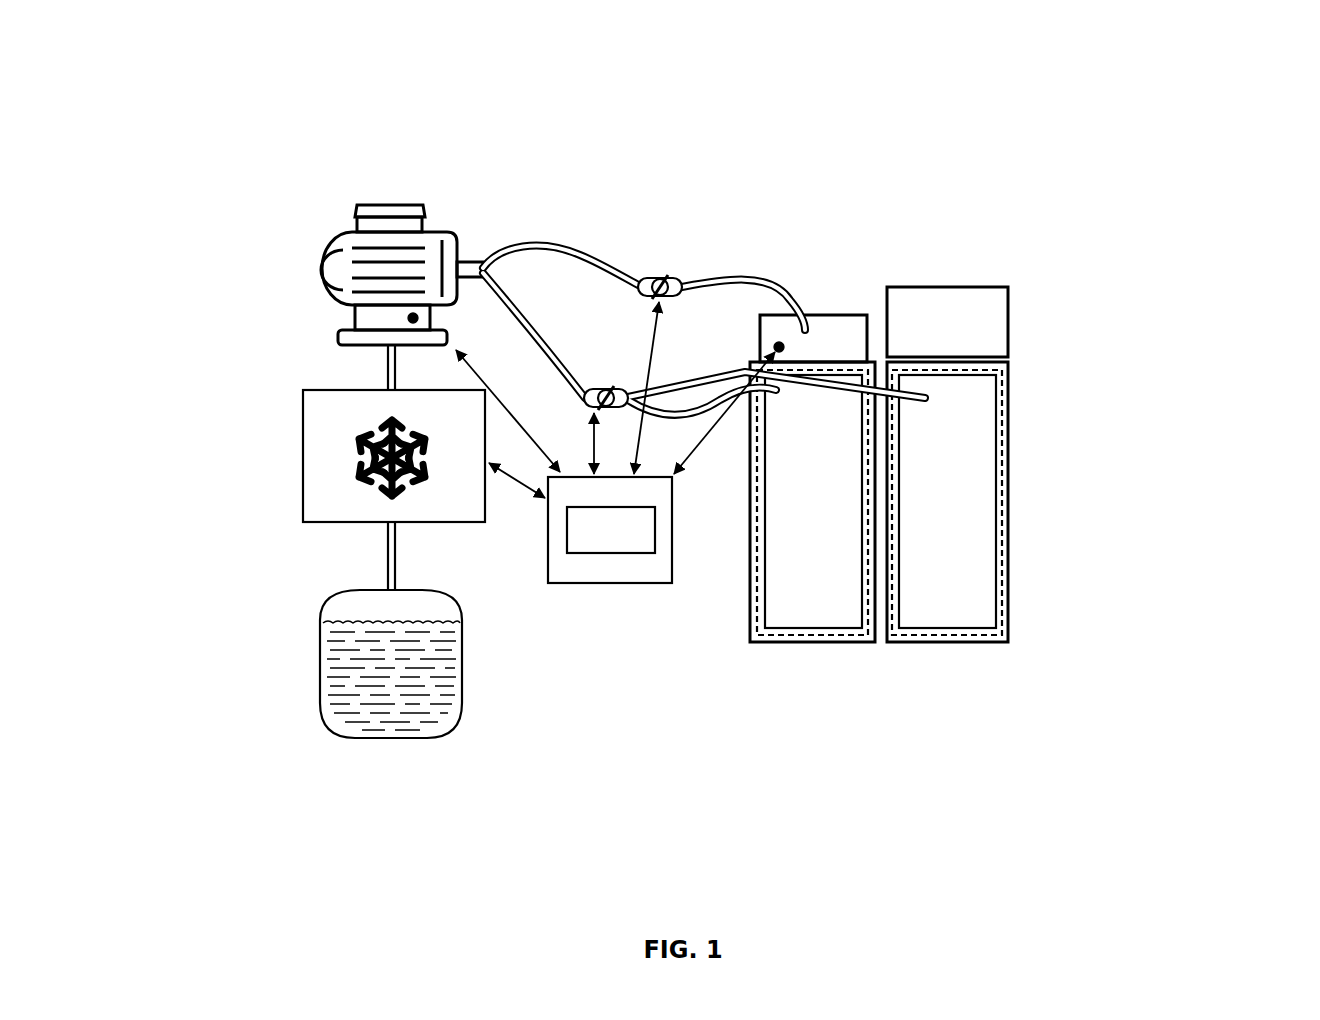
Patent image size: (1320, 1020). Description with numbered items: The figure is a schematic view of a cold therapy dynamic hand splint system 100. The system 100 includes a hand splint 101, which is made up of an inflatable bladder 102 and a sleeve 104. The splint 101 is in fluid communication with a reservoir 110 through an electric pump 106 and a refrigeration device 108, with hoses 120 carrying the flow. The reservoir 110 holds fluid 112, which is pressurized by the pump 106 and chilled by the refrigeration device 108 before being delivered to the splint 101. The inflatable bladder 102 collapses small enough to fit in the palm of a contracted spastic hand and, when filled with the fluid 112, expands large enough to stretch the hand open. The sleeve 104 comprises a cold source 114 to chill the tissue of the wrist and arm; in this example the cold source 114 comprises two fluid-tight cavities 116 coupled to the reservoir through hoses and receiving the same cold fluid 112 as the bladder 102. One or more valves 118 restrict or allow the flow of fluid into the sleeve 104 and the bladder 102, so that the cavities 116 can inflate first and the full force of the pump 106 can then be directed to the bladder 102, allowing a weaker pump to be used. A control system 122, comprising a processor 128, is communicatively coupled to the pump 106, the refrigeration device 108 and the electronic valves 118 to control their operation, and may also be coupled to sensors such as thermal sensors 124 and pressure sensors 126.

The cold therapy dynamic hand splint system 100 is at (1196, 152).
The hand splint 101 is at (932, 216).
The inflatable bladder 102 is at (838, 328).
The sleeve 104 is at (933, 441).
The electric pump 106 is at (352, 230).
The refrigeration device 108 is at (303, 440).
The reservoir 110 is at (320, 620).
The fluid 112 is at (330, 687).
The cold source 114 is at (900, 555).
The fluid-tight cavities 116 is at (840, 633).
The valves 118 is at (668, 280).
The hoses 120 is at (388, 548).
The control system 122 is at (596, 596).
The thermal sensors 124 is at (408, 318).
The pressure sensors 126 is at (776, 345).
The processor 128 is at (611, 530).